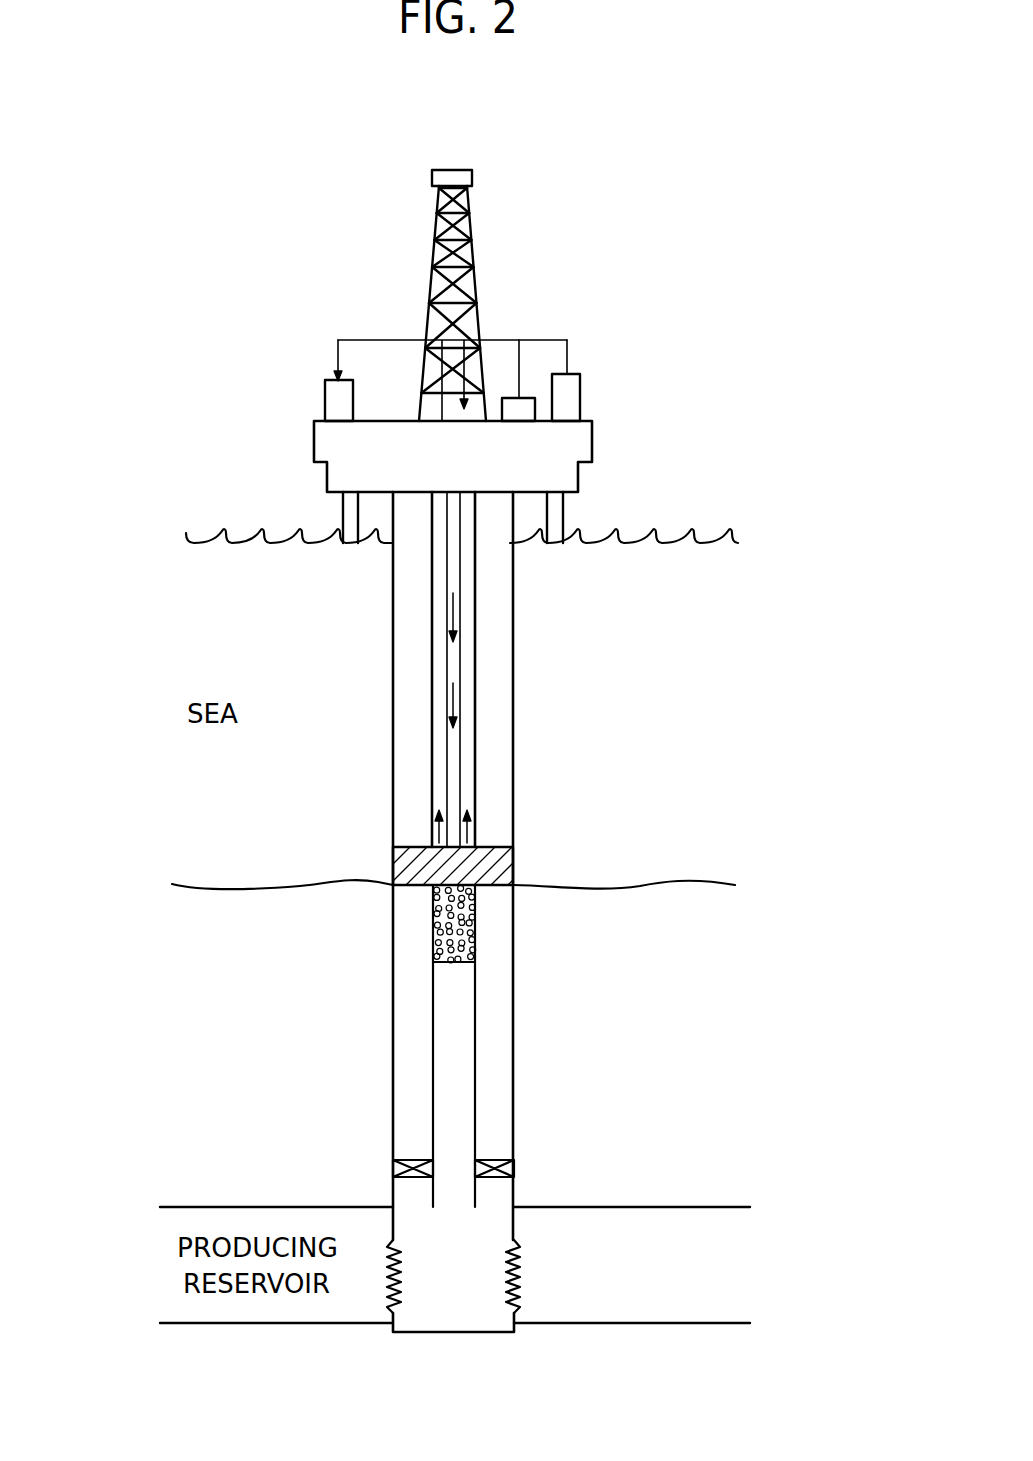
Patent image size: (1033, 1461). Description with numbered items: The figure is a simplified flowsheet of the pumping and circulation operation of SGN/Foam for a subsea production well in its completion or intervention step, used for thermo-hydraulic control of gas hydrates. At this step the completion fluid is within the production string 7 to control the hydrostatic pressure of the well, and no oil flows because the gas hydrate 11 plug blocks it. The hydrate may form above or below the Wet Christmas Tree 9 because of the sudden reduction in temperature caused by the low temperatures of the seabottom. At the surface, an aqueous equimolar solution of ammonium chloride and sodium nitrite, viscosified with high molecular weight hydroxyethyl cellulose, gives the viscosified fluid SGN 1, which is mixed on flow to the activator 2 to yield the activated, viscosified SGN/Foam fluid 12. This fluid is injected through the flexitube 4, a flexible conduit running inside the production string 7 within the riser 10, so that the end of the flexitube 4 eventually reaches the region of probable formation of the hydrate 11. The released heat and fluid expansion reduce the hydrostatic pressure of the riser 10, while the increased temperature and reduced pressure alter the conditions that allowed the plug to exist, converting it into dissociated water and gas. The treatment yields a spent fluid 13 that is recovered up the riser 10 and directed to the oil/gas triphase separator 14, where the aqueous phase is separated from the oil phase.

The viscosified fluid SGN 1 is at (596, 366).
The activator 2 is at (527, 390).
The flexitube 4 is at (475, 757).
The production string 7 is at (488, 667).
The Wet Christmas Tree 9 is at (526, 866).
The riser 10 is at (525, 623).
The gas hydrate 11 is at (487, 943).
The SGN/Foam fluid 12 is at (468, 568).
The spent fluid 13 is at (412, 680).
The separator 14 is at (332, 390).